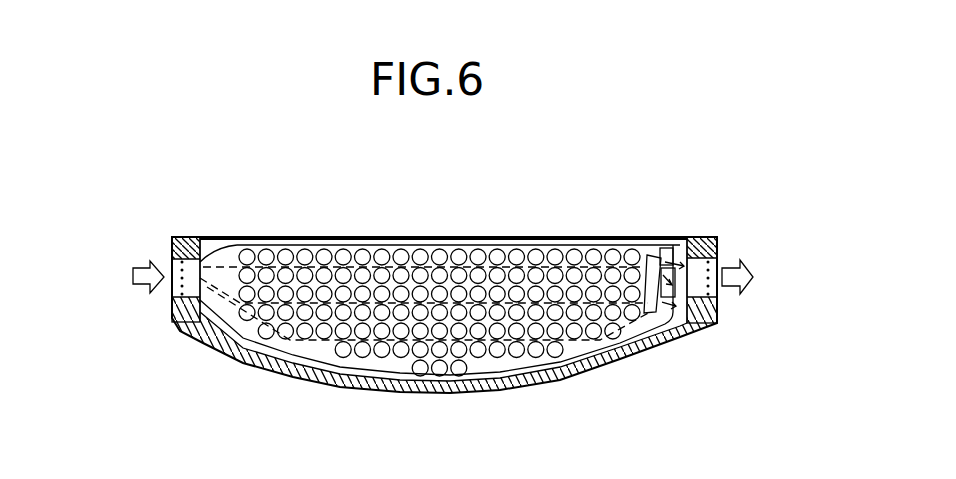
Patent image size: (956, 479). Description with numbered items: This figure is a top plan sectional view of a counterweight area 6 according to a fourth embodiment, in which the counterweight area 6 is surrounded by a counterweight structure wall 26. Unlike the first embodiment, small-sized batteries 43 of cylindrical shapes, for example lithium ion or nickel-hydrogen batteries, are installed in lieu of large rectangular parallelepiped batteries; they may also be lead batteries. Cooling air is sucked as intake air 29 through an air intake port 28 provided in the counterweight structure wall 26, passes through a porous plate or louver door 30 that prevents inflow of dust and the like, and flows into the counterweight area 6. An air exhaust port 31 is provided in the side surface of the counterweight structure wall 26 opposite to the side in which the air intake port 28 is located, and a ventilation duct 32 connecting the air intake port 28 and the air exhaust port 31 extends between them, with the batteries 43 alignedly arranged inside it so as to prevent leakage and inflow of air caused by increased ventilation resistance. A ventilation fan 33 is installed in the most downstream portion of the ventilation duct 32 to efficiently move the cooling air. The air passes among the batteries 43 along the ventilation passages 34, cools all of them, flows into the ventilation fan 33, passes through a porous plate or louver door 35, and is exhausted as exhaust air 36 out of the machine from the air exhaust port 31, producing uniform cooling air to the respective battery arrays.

The counterweight area 6 is at (213, 340).
The counterweight structure wall 26 is at (288, 372).
The air intake port 28 is at (187, 318).
The intake air 29 is at (156, 292).
The porous plate or louver door 30 is at (170, 263).
The air exhaust port 31 is at (717, 292).
The ventilation duct 32 is at (232, 322).
The ventilation fan 33 is at (653, 257).
The ventilation passages 34 is at (222, 247).
The porous plate or louver door 35 is at (717, 262).
The exhaust air 36 is at (742, 287).
The small-sized batteries 43 is at (400, 349).